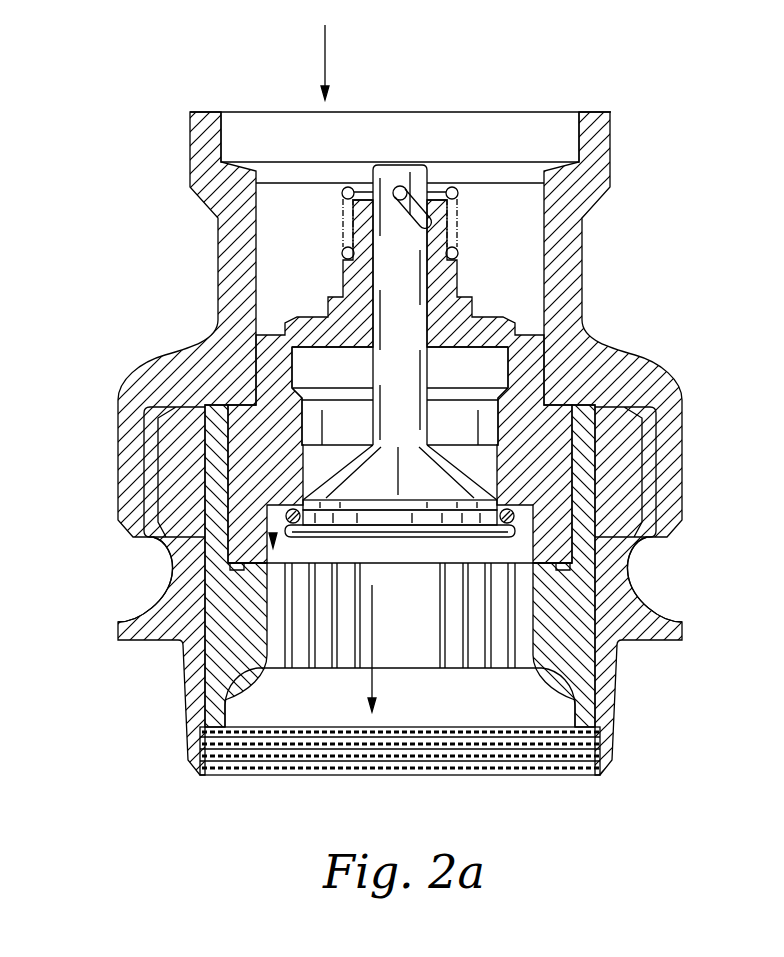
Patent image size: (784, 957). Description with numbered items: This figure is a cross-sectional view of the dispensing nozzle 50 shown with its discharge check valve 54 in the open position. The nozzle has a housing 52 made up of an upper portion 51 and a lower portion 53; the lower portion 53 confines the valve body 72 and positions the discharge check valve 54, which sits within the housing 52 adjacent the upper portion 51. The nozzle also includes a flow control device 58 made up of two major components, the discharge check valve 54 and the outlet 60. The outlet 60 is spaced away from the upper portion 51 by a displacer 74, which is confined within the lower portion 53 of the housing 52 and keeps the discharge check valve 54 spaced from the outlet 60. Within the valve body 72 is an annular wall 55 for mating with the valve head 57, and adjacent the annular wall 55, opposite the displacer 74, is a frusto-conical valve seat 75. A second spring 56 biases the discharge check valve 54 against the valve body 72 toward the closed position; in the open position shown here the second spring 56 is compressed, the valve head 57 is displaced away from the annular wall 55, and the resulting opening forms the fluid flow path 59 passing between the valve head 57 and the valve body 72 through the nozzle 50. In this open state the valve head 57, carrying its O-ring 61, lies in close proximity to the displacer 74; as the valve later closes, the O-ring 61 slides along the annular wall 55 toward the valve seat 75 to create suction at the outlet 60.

The dispensing nozzle 50 is at (512, 99).
The upper portion 51 is at (190, 125).
The housing 52 is at (137, 325).
The lower portion 53 is at (167, 592).
The discharge check valve 54 is at (403, 165).
The annular wall 55 is at (508, 474).
The second spring 56 is at (457, 220).
The valve head 57 is at (428, 517).
The flow control device 58 is at (270, 799).
The fluid flow path 59 is at (323, 62).
The outlet 60 is at (365, 780).
The O-ring 61 is at (508, 512).
The valve body 72 is at (283, 322).
The displacer 74 is at (233, 717).
The valve seat 75 is at (302, 450).